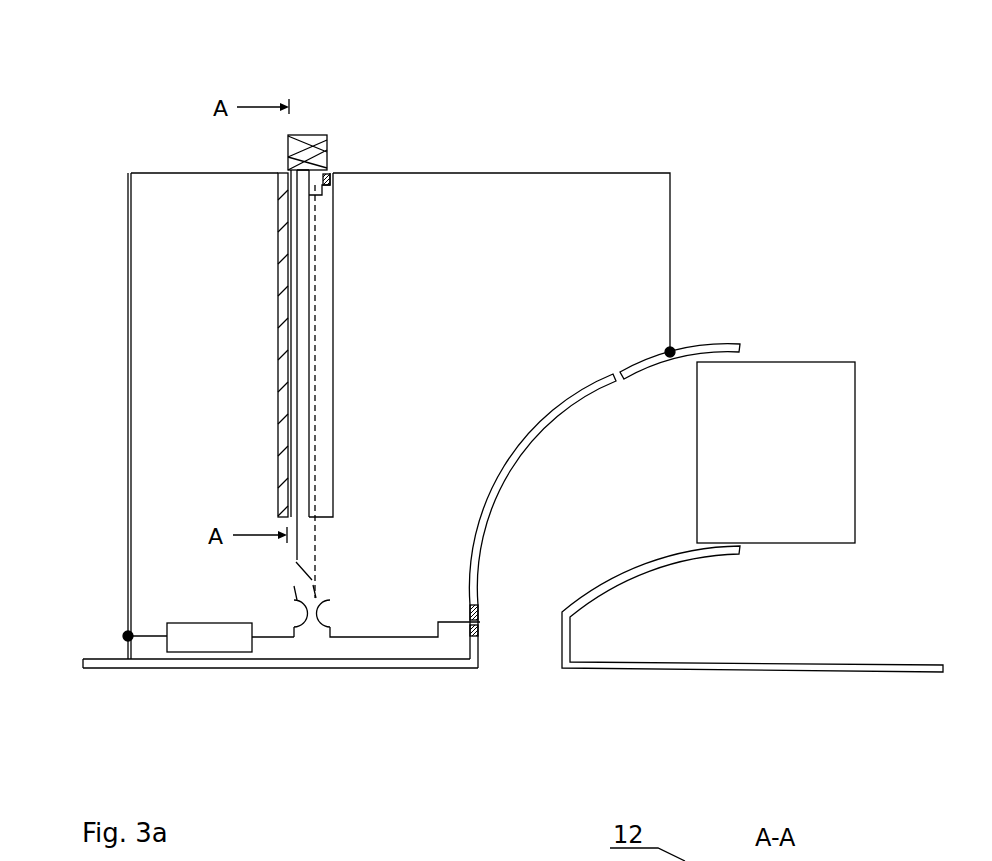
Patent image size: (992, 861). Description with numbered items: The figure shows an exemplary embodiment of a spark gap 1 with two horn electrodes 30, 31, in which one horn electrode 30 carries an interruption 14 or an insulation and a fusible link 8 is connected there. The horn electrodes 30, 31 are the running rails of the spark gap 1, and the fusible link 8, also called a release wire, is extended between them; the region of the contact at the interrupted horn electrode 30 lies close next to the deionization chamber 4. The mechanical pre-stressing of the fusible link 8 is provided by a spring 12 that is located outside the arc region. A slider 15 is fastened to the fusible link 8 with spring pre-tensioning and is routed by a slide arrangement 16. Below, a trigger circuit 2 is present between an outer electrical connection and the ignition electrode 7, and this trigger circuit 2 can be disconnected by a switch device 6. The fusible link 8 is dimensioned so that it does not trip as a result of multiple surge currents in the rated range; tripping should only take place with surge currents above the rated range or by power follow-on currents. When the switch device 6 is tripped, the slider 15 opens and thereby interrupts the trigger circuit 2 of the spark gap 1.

The spark gap 1 is at (444, 322).
The trigger circuit 2 is at (210, 640).
The deionization chamber 4 is at (808, 362).
The switch device 6 is at (302, 628).
The ignition electrode 7 is at (452, 622).
The fusible link 8 is at (327, 175).
The spring 12 is at (288, 160).
The interruption 14 is at (620, 372).
The slider 15 is at (305, 556).
The slide arrangement 16 is at (278, 317).
The horn electrode 30 is at (545, 415).
The horn electrode 31 is at (628, 577).